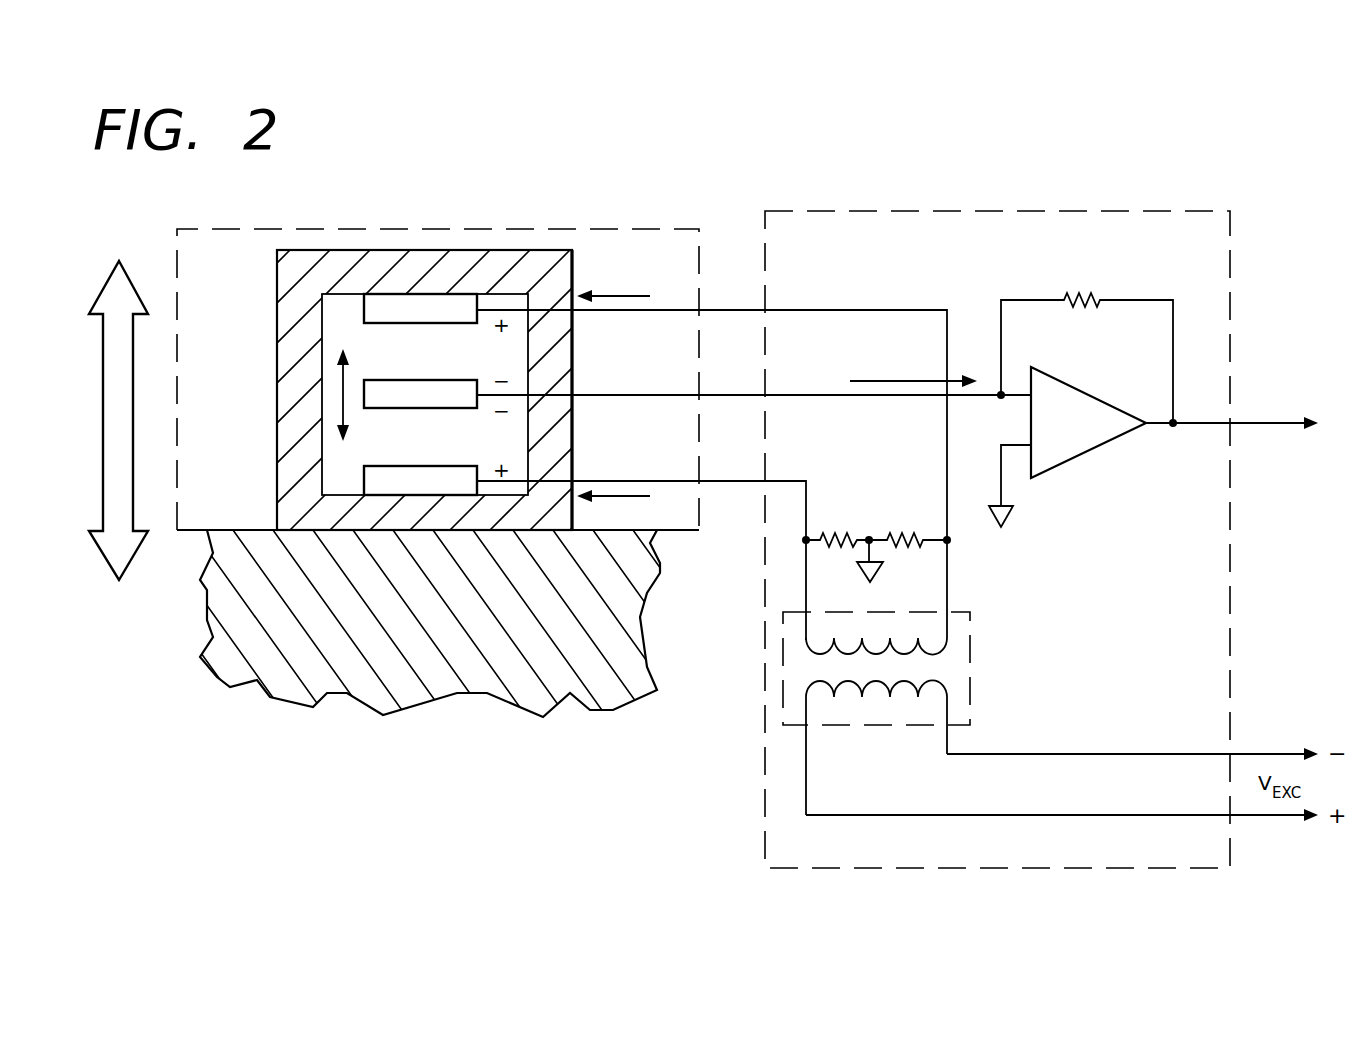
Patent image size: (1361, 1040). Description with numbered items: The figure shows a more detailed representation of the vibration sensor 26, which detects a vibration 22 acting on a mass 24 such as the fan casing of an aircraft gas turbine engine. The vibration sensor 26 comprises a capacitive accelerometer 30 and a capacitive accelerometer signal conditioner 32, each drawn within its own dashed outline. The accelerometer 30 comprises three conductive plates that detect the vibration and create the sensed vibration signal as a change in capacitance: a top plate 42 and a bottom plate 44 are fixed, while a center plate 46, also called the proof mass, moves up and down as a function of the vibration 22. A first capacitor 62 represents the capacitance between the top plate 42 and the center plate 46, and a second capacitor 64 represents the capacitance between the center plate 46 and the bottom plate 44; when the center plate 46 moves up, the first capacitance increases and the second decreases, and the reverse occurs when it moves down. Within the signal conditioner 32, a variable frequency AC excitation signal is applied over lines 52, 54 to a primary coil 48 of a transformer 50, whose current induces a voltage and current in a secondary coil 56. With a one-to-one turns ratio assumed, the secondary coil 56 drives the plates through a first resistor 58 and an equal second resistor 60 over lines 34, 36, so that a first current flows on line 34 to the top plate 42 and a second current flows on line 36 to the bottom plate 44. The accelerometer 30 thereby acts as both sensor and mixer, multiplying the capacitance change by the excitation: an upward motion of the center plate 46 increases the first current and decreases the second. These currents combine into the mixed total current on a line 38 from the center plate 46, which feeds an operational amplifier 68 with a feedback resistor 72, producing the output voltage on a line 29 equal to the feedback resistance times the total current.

The vibration 22 is at (104, 432).
The mass 24 is at (281, 703).
The vibration sensor 26 is at (1232, 139).
The line 29 is at (1268, 421).
The capacitive accelerometer 30 is at (566, 231).
The capacitive accelerometer signal conditioner 32 is at (920, 211).
The line 34 is at (806, 311).
The line 36 is at (737, 484).
The line 38 is at (752, 395).
The top plate 42 is at (407, 325).
The bottom plate 44 is at (373, 465).
The center plate 46 is at (400, 380).
The primary coil 48 is at (948, 686).
The transformer 50 is at (973, 634).
The line 52 is at (1043, 815).
The line 54 is at (1098, 753).
The secondary coil 56 is at (877, 677).
The resistor R1 58 is at (898, 547).
The resistor R2 60 is at (852, 540).
The capacitor C1 62 is at (511, 352).
The capacitor C2 64 is at (511, 440).
The operational amplifier 68 is at (1099, 448).
The resistor R3 72 is at (1088, 304).